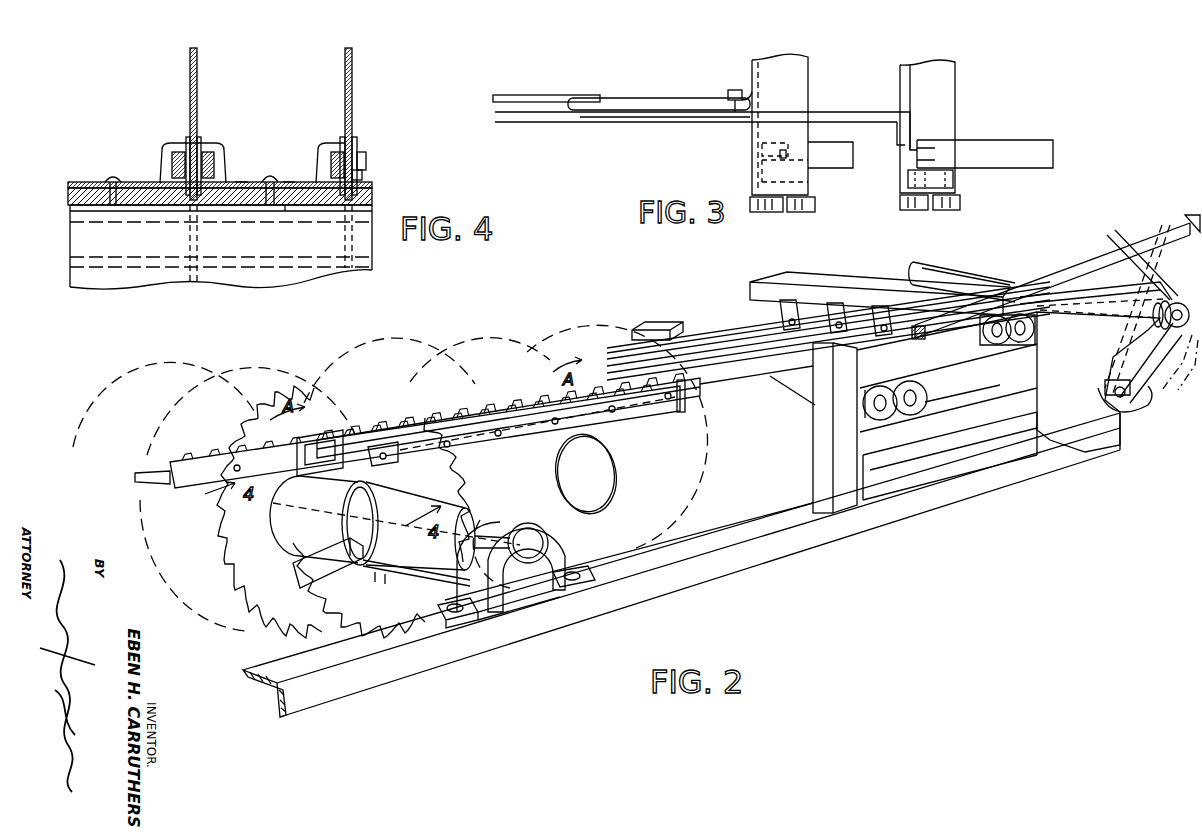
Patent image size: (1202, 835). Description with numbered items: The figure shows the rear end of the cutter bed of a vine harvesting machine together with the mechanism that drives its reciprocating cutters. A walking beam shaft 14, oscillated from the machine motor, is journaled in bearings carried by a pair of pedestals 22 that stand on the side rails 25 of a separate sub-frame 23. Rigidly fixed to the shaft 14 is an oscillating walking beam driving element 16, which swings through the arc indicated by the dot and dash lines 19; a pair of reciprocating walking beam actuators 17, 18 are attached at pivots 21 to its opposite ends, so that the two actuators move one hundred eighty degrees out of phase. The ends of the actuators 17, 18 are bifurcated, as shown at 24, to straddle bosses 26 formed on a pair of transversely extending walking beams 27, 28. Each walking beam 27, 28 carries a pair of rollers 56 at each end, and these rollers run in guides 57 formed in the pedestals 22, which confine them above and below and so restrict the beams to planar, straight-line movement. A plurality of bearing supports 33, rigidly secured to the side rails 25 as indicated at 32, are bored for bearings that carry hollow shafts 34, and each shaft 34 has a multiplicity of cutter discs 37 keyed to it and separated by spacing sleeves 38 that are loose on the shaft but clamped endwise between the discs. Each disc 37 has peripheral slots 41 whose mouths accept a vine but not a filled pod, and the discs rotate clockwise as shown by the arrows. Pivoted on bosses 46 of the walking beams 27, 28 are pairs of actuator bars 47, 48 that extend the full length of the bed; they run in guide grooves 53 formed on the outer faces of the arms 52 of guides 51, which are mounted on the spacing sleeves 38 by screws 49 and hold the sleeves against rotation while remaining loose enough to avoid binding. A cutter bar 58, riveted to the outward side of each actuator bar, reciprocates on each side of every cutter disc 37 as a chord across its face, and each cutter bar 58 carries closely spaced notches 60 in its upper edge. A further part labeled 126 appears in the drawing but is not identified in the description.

In FIG. 2, the walking beam shaft 14 is at (1152, 316).
In FIG. 2, the oscillating walking beam driving element 16 is at (1165, 286).
In FIG. 2, the reciprocating walking beam actuator 17 is at (1073, 268).
In FIG. 2, the reciprocating walking beam actuator 18 is at (1110, 397).
In FIG. 2, the dot and dash lines 19 is at (1150, 226).
In FIG. 2, the pivot 21 is at (1160, 252).
In FIG. 2, the pedestal 22 is at (988, 406).
In FIG. 2, the sub-frame 23 is at (1010, 478).
In FIG. 3, the bifurcated end 24 is at (760, 160).
In FIG. 2, the bifurcated end 24 is at (977, 290).
In FIG. 2, the side rail 25 is at (640, 594).
In FIG. 3, the boss 26 is at (985, 154).
In FIG. 3, the walking beam 27 is at (942, 94).
In FIG. 2, the walking beam 27 is at (812, 285).
In FIG. 3, the walking beam 28 is at (795, 98).
In FIG. 2, the walking beam 28 is at (684, 325).
In FIG. 2, the rigid securement 32 is at (472, 614).
In FIG. 2, the bearing support 33 is at (523, 597).
In FIG. 4, the shaft 34 is at (286, 207).
In FIG. 2, the shaft 34 is at (540, 541).
In FIG. 4, the cutter disc 37 is at (197, 105).
In FIG. 4, the spacing sleeve 38 is at (284, 180).
In FIG. 2, the slot 41 is at (280, 390).
In FIG. 3, the boss 46 is at (738, 90).
In FIG. 3, the actuator bar 47 is at (660, 98).
In FIG. 3, the actuator bar 48 is at (663, 124).
In FIG. 4, the screw 49 is at (270, 175).
In FIG. 4, the guide 51 is at (242, 170).
In FIG. 4, the arm 52 is at (222, 166).
In FIG. 4, the guide groove 53 is at (172, 160).
In FIG. 2, the roller 56 is at (912, 415).
In FIG. 2, the guide 57 is at (958, 404).
In FIG. 4, the cutter bar 58 is at (341, 140).
In FIG. 3, the cutter bar 58 is at (520, 96).
In FIG. 2, the cutter bar 58 is at (672, 404).
In FIG. 2, the notch 60 is at (598, 398).
In FIG. 3, the pin 126 is at (774, 150).